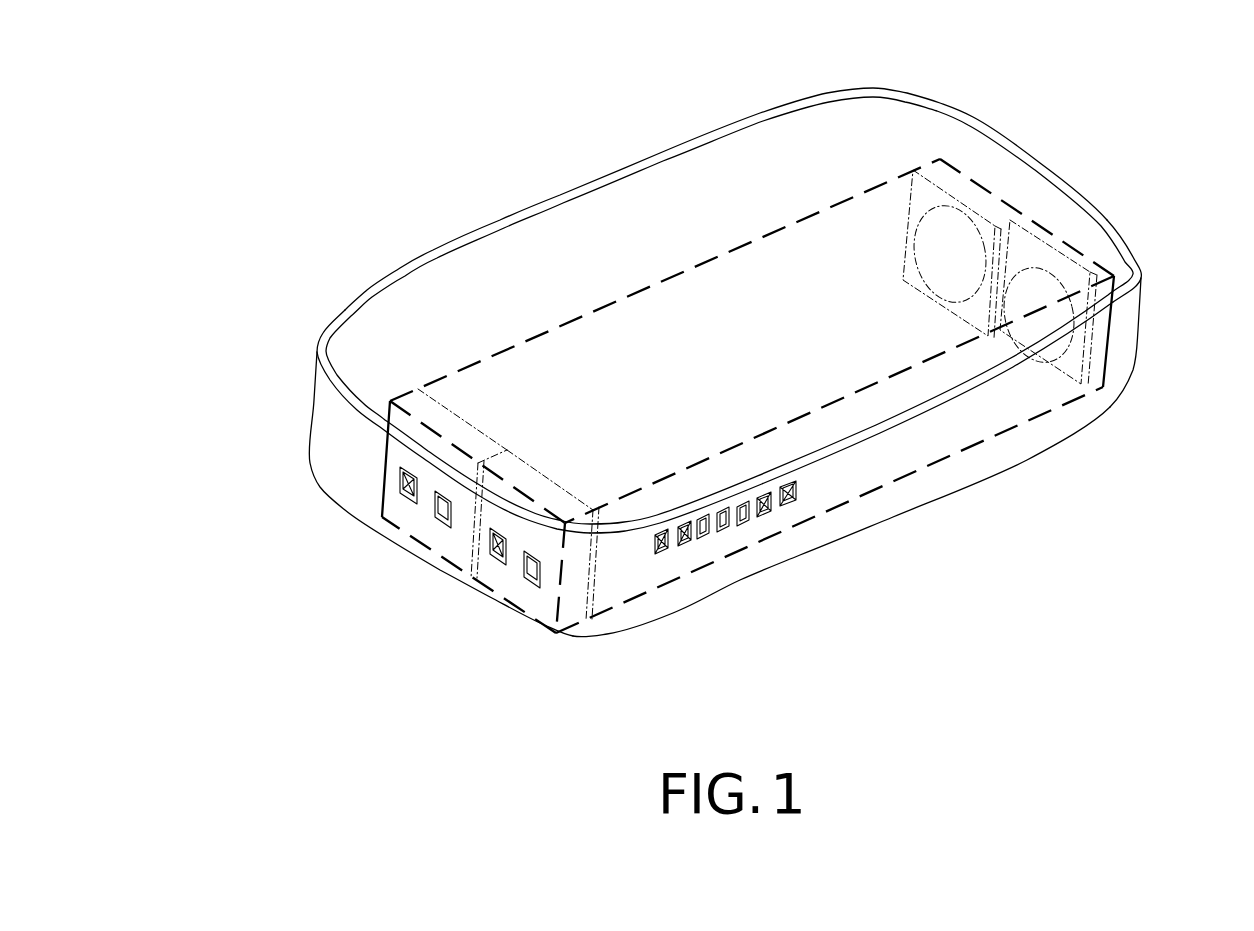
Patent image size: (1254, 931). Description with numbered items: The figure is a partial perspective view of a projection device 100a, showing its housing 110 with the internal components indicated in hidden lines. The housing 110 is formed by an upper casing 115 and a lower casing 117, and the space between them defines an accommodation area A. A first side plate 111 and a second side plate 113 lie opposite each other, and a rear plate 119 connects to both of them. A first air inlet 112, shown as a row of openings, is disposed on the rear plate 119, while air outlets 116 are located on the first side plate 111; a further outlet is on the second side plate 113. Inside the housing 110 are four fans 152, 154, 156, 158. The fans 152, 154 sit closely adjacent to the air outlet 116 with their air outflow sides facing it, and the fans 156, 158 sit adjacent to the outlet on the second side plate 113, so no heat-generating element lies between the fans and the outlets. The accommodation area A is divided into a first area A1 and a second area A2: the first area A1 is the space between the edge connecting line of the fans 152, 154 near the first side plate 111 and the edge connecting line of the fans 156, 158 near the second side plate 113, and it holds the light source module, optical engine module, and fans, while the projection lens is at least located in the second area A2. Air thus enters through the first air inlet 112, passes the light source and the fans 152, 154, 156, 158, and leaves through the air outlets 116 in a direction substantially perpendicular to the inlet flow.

The projection device 100a is at (1087, 578).
The housing 110 is at (729, 310).
The first side plate 111 is at (352, 488).
The first air inlet 112 is at (794, 498).
The second side plate 113 is at (1070, 186).
The upper casing 115 is at (892, 132).
The air outlet 116 is at (416, 488).
The lower casing 117 is at (1032, 462).
The rear plate 119 is at (910, 500).
The fan 152 is at (435, 538).
The fan 154 is at (535, 603).
The fan 156 is at (963, 188).
The fan 158 is at (1062, 255).
The accommodation area A is at (617, 101).
The first area A1 is at (655, 330).
The second area A2 is at (576, 230).